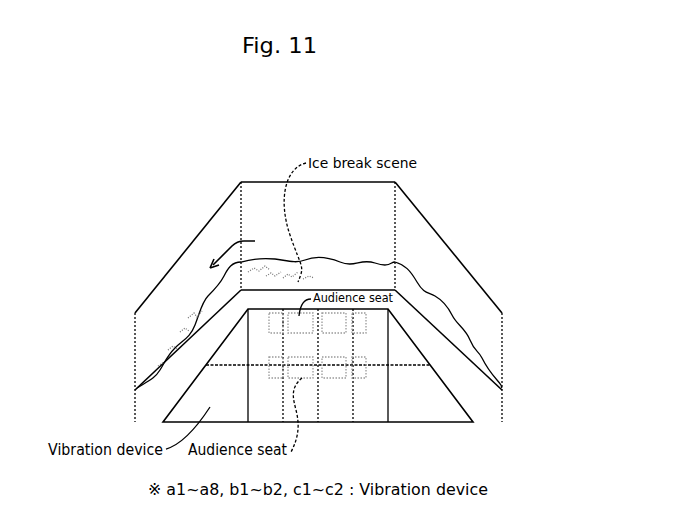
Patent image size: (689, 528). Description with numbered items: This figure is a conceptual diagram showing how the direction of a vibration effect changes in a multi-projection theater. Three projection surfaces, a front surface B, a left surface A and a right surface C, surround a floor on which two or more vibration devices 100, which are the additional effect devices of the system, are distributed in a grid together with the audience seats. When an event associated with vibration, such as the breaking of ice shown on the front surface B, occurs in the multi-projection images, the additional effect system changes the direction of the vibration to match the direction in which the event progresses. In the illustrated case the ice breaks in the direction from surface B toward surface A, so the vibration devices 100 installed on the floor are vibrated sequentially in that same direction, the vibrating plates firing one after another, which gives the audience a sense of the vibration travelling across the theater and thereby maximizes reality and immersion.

The additional effect device 100 is at (373, 412).
The left projection surface A is at (195, 302).
The front projection surface B is at (318, 236).
The right projection surface C is at (448, 302).